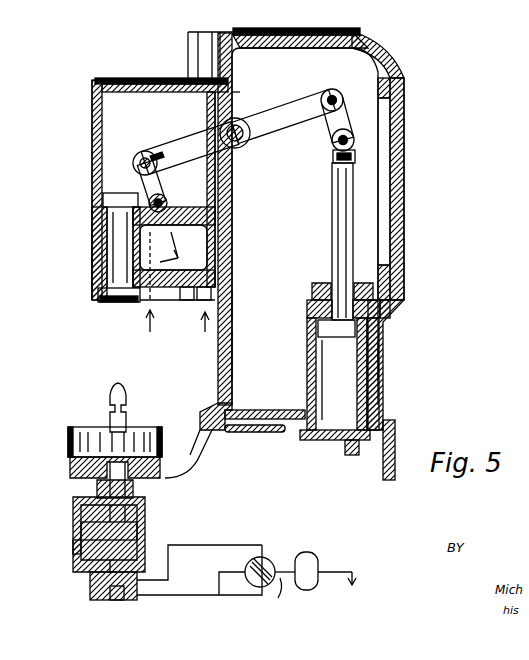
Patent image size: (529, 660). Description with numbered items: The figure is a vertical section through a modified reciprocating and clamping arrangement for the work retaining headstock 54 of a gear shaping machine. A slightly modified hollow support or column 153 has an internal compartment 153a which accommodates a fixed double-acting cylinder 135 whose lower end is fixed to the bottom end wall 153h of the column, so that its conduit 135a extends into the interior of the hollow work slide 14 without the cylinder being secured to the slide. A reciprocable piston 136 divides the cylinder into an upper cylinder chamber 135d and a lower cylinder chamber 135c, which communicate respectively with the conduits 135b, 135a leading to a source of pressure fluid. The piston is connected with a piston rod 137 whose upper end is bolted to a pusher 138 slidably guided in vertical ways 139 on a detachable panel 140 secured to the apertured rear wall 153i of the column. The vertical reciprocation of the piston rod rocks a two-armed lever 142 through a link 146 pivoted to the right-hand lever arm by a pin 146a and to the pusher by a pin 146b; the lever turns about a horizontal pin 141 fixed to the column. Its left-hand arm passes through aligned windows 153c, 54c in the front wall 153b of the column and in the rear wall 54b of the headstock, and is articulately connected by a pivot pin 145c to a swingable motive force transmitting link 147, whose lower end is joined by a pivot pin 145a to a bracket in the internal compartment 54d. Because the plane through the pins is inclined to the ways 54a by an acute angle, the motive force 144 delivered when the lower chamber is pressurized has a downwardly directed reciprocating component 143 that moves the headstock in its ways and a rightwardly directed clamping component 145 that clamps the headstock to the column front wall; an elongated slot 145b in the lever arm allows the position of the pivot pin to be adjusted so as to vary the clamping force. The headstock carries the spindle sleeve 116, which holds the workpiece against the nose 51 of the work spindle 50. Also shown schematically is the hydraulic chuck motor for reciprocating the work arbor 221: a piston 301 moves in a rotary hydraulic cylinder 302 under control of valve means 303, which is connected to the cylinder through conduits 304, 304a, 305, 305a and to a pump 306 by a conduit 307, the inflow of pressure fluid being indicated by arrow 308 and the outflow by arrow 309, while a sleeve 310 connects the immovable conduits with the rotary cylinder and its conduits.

The work slide 14 is at (396, 445).
The work spindle 50 is at (76, 464).
The nose of the work spindle 51 is at (68, 434).
The headstock 54 is at (96, 82).
The ways 54a is at (188, 52).
The rear wall of the headstock 54b is at (232, 219).
The window 54c is at (232, 200).
The internal compartment 54d is at (93, 124).
The spindle sleeve 116 is at (107, 244).
The double-acting cylinder 135 is at (370, 382).
The conduit 135a is at (350, 456).
The conduit 135b is at (312, 320).
The lower cylinder chamber 135c is at (372, 404).
The upper cylinder chamber 135d is at (386, 300).
The piston 136 is at (386, 318).
The piston rod 137 is at (331, 244).
The pusher 138 is at (362, 165).
The vertical ways 139 is at (384, 204).
The detachable panel 140 is at (405, 236).
The horizontal pin 141 is at (246, 146).
The two-armed lever 142 is at (302, 98).
The reciprocating component 143 is at (146, 324).
The motive force 144 is at (233, 306).
The clamping component 145 is at (184, 344).
The pivot pin 145a is at (168, 204).
The elongated slot 145b is at (160, 146).
The pivot pin 145c is at (134, 157).
The link 146 is at (334, 128).
The pin 146a is at (334, 90).
The pin 146b is at (332, 162).
The motive force transmitting link 147 is at (164, 186).
The hollow support or column 153 is at (384, 56).
The internal compartment 153a is at (262, 426).
The front wall of the column 153b is at (233, 360).
The window 153c is at (242, 92).
The bottom end wall 153h is at (276, 450).
The apertured rear wall 153i is at (384, 356).
The work arbor 221 is at (110, 394).
The piston 301 is at (140, 530).
The hydraulic cylinder 302 is at (146, 500).
The valve means 303 is at (268, 560).
The conduit 304 is at (199, 545).
The conduit 304a is at (73, 550).
The conduit 305 is at (202, 596).
The conduit 305a is at (118, 600).
The pump 306 is at (310, 560).
The conduit 307 is at (280, 600).
The inflow arrow 308 is at (355, 576).
The outflow arrow 309 is at (216, 578).
The sleeve 310 is at (90, 586).